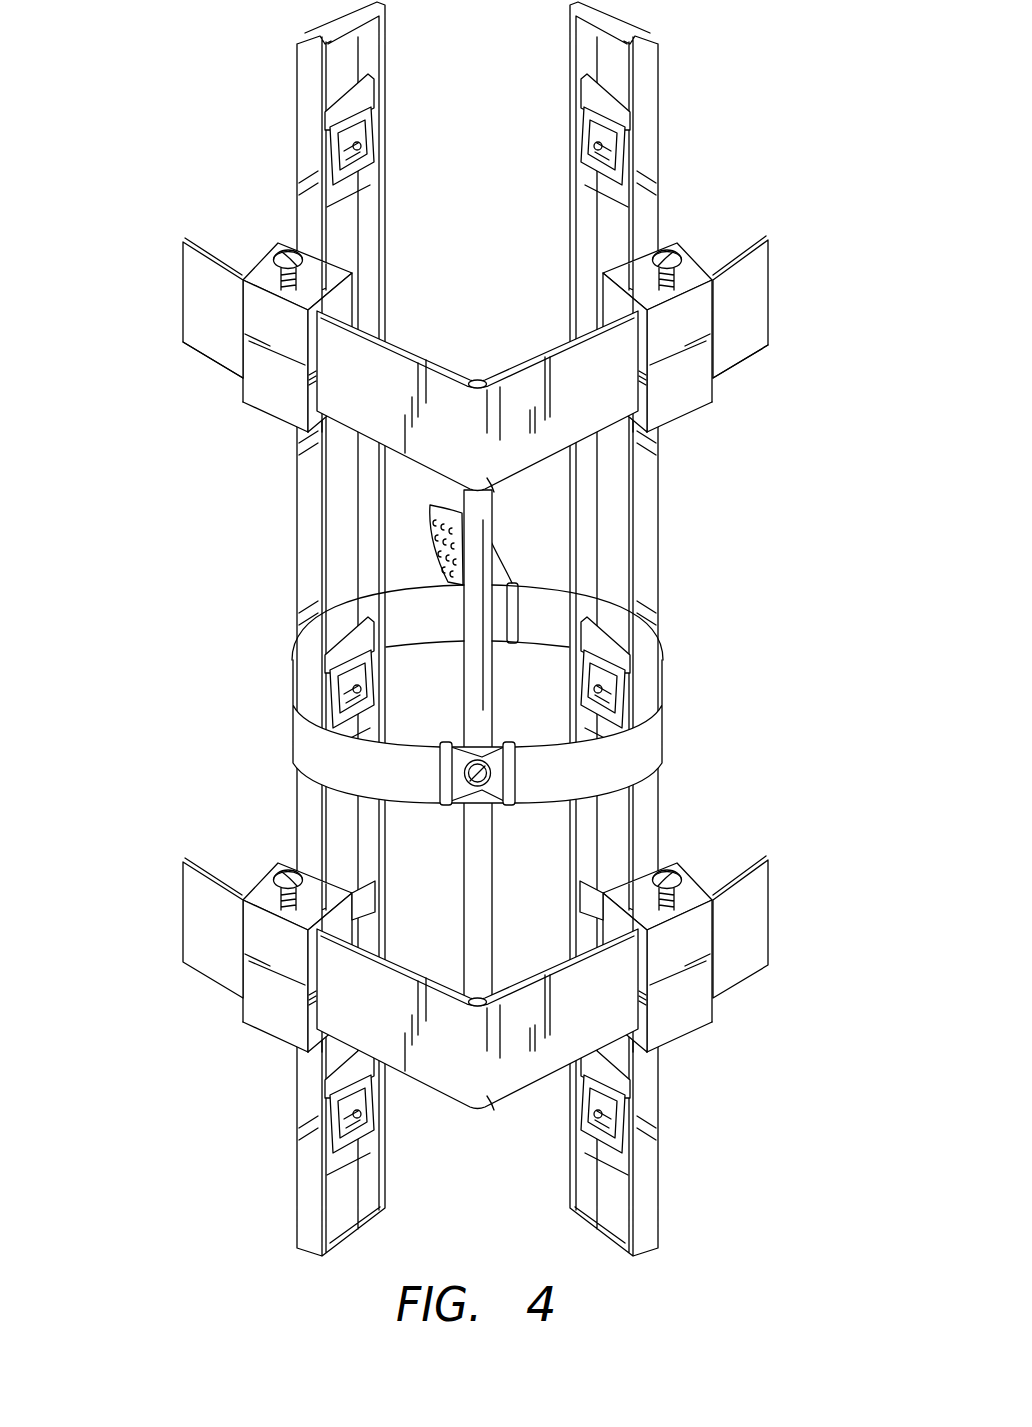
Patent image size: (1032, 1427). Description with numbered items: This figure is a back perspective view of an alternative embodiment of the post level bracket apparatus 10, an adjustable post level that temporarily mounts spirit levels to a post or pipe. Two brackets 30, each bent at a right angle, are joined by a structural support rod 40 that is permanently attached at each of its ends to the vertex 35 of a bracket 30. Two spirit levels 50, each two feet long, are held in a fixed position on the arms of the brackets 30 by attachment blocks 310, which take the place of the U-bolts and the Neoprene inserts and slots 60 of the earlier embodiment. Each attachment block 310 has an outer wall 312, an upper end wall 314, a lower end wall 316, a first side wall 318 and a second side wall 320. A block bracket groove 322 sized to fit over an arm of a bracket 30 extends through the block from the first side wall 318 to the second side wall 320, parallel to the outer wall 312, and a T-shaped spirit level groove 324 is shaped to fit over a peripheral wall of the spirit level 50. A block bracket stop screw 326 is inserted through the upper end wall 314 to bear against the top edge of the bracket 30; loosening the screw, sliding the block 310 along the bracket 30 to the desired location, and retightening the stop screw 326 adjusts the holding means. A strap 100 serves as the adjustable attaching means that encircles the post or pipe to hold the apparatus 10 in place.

The post level bracket apparatus 10 is at (850, 100).
The bracket 30 is at (203, 940).
The vertex 35 is at (478, 1108).
The structural support rod 40 is at (486, 720).
The spirit level 50 is at (652, 76).
The slots 60 is at (732, 343).
The strap 100 is at (590, 783).
The attachment block 310 is at (705, 1019).
The outer wall 312 is at (733, 935).
The upper end wall 314 is at (710, 883).
The lower end wall 316 is at (700, 1033).
The first side wall 318 is at (606, 912).
The second side wall 320 is at (714, 887).
The block bracket groove 322 is at (640, 967).
The spirit level groove 324 is at (608, 912).
The block bracket stop screw 326 is at (667, 873).